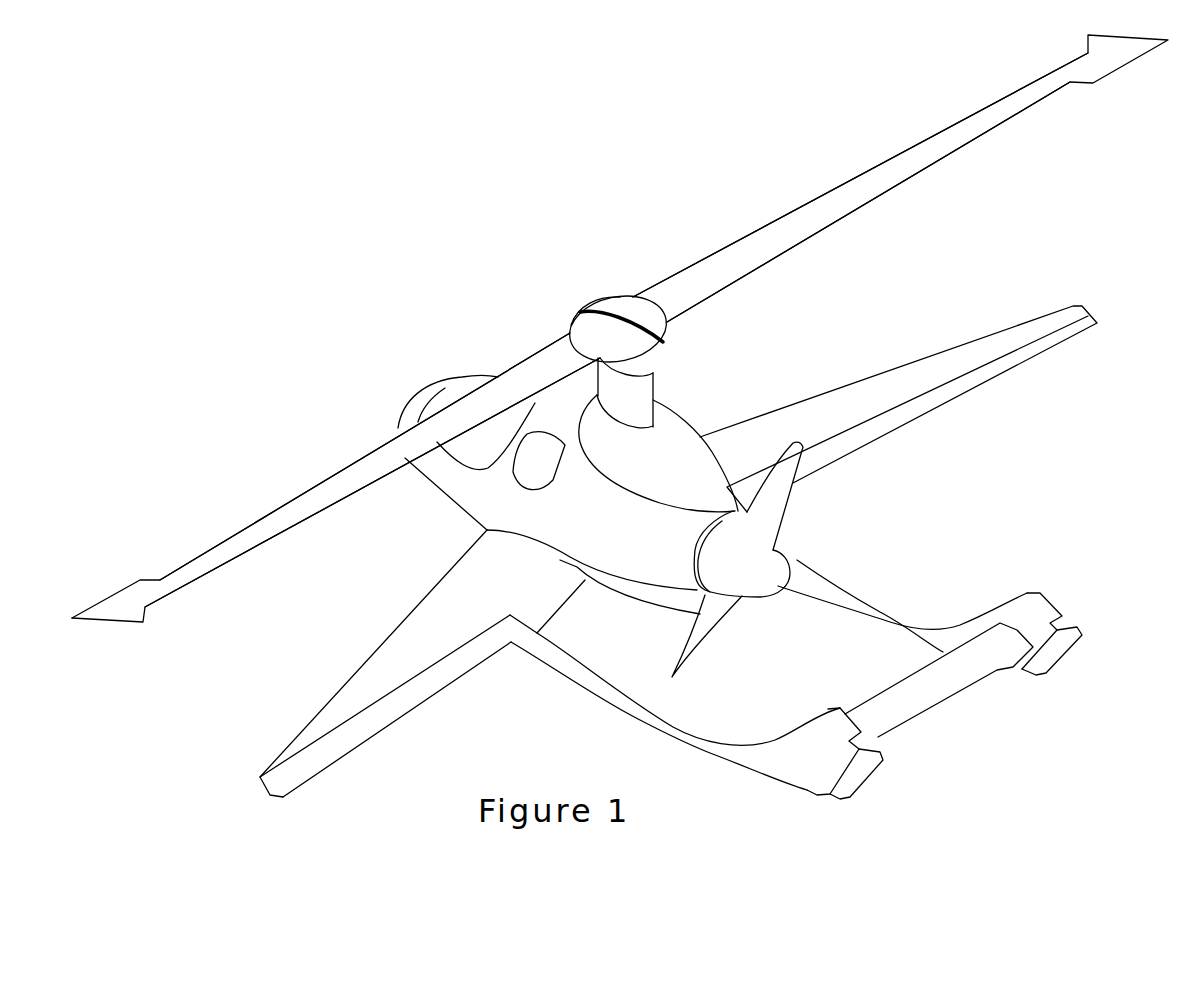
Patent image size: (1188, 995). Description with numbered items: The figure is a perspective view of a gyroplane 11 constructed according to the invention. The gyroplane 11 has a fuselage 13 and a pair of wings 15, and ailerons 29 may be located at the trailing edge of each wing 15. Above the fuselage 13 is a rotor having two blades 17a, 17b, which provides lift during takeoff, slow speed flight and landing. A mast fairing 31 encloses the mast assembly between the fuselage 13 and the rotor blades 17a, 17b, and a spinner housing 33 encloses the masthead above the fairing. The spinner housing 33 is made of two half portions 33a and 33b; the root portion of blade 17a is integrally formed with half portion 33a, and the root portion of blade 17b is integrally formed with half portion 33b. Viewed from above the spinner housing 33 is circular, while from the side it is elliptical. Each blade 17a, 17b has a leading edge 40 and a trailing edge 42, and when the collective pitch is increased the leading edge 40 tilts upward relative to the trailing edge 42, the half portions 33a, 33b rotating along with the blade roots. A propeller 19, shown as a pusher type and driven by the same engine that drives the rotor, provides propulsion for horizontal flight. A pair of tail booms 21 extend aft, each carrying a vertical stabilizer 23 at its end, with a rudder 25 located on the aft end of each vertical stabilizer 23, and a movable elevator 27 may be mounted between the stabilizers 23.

The gyroplane 11 is at (377, 643).
The fuselage 13 is at (463, 500).
The wings 15 is at (363, 712).
The rotor blade 17a is at (297, 497).
The rotor blade 17b is at (917, 172).
The propeller 19 is at (783, 508).
The tail booms 21 is at (610, 712).
The vertical stabilizer 23 is at (798, 768).
The rudder 25 is at (858, 772).
The elevator 27 is at (927, 702).
The ailerons 29 is at (423, 702).
The mast fairing 31 is at (653, 382).
The spinner housing 33 is at (603, 303).
The spinner housing half portion 33a is at (577, 313).
The spinner housing half portion 33b is at (620, 300).
The leading edge 40 is at (708, 258).
The trailing edge 42 is at (790, 250).